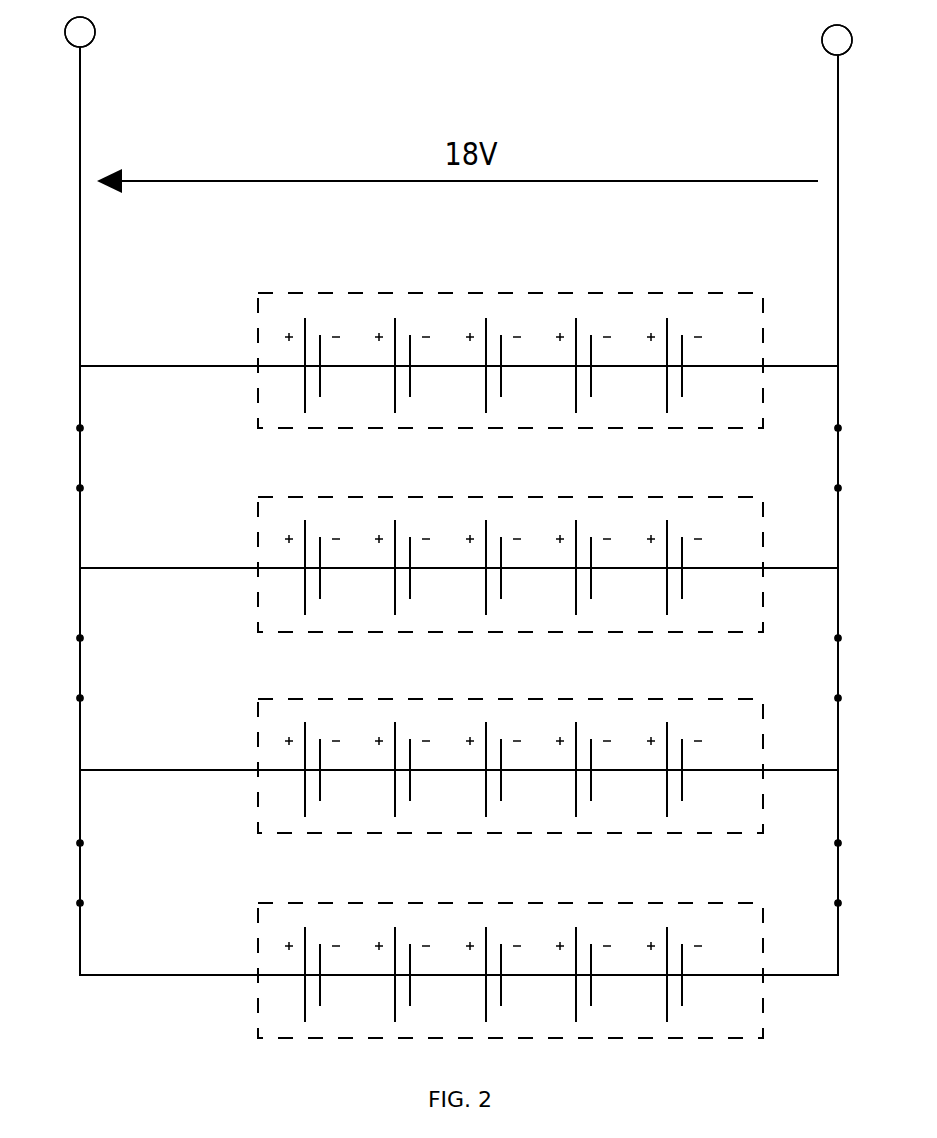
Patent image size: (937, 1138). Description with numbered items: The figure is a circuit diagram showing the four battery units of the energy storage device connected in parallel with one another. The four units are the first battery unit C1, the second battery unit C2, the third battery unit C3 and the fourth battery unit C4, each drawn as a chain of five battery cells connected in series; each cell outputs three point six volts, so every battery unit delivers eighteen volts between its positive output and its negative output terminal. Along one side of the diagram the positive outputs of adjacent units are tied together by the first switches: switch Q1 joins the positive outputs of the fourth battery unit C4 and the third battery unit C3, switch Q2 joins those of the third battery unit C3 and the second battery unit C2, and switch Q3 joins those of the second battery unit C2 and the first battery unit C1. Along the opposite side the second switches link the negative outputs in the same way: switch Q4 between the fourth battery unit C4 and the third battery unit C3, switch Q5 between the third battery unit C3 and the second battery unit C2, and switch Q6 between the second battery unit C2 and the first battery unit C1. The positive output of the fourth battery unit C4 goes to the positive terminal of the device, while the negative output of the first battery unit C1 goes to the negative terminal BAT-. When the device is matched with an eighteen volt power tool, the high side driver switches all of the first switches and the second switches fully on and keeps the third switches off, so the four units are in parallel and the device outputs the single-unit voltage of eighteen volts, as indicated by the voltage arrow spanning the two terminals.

The first battery unit C1 is at (277, 912).
The second battery unit C2 is at (277, 723).
The third battery unit C3 is at (277, 538).
The fourth battery unit C4 is at (277, 349).
The switch Q1 is at (55, 458).
The switch Q2 is at (55, 668).
The switch Q3 is at (55, 873).
The switch Q4 is at (870, 458).
The switch Q5 is at (870, 668).
The switch Q6 is at (870, 873).
The battery negative terminal BAT- is at (847, 185).